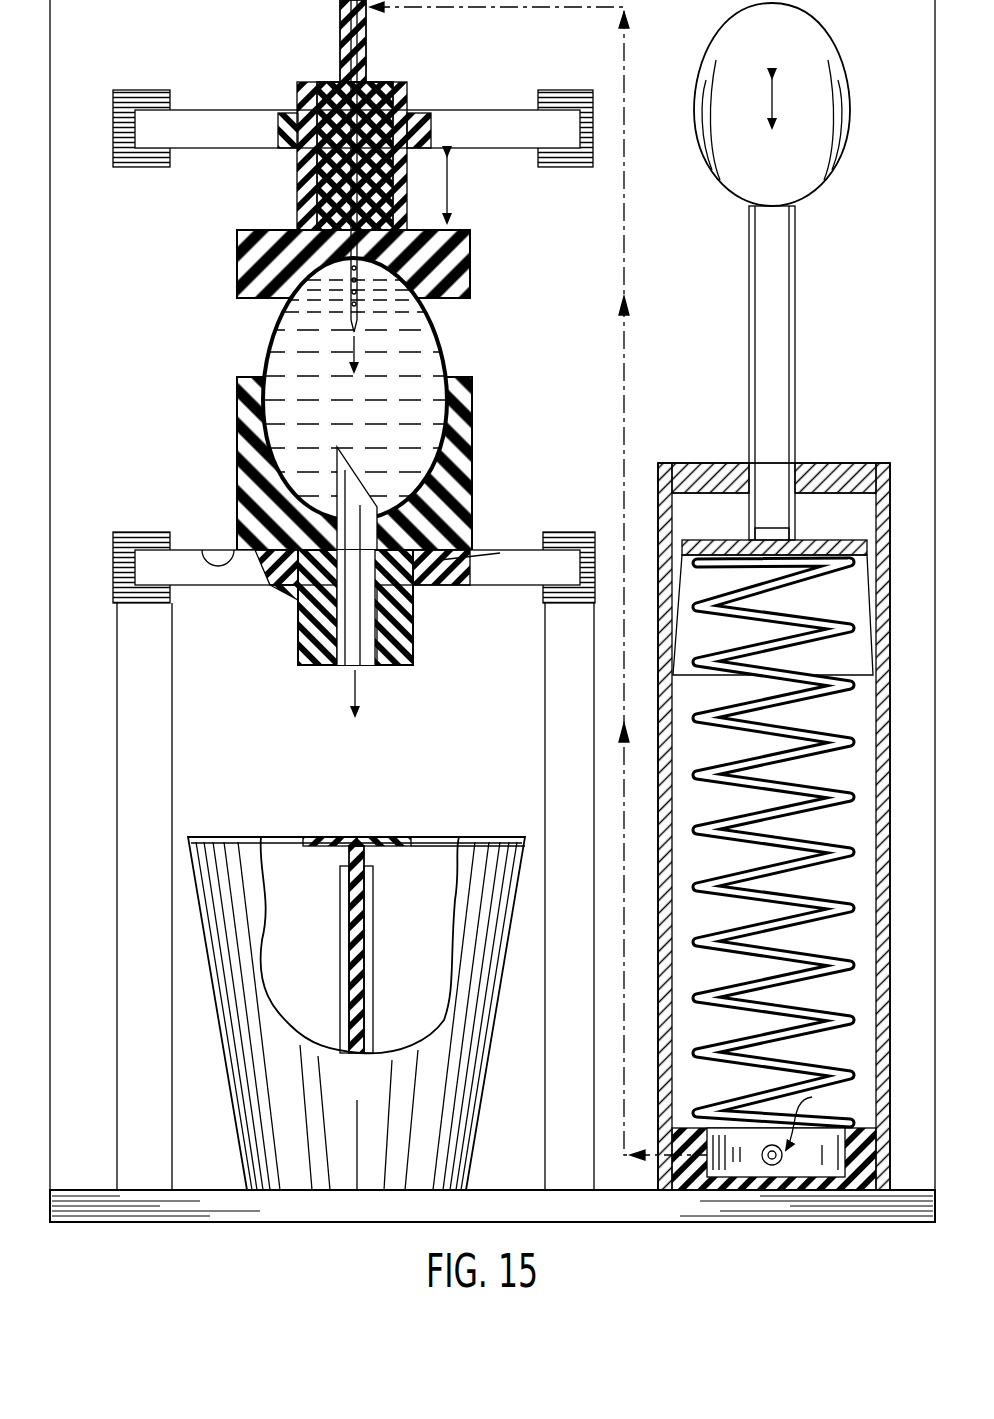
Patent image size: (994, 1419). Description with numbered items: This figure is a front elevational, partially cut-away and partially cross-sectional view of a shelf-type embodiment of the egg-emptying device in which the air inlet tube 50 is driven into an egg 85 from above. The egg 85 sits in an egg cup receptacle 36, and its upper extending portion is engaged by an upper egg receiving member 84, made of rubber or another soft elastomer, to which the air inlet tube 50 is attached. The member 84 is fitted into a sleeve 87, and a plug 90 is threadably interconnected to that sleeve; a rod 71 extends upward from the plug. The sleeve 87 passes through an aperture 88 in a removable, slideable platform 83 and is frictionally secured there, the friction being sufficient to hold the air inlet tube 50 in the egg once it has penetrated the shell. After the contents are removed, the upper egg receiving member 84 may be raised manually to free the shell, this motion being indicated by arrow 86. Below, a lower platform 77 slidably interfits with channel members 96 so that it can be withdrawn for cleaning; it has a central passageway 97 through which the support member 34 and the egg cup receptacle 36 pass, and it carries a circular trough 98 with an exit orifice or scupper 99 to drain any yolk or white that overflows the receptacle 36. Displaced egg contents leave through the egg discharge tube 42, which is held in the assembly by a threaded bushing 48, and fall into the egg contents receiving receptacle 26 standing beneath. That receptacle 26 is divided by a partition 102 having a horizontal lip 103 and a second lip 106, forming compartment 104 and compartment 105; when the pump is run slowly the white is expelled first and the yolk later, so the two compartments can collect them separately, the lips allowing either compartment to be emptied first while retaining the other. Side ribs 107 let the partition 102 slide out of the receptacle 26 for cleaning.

The rod 71 is at (366, 28).
The plug 90 is at (390, 82).
The aperture 88 is at (420, 113).
The platform 83 is at (480, 110).
The sleeve 87 is at (305, 166).
The arrow 86 is at (455, 184).
The upper egg receiving member 84 is at (455, 248).
The egg 85 is at (447, 352).
The air inlet tube 50 is at (360, 310).
The egg cup receptacle 36 is at (472, 400).
The egg discharge tube 42 is at (337, 470).
The channel members 96 is at (142, 532).
The circular trough 98 is at (218, 556).
The lower platform 77 is at (268, 590).
The central passageway 97 is at (294, 590).
The scupper 99 is at (445, 578).
The support member 34 is at (410, 640).
The threaded bushing 48 is at (385, 670).
The compartment 104 is at (268, 840).
The second lip 106 is at (318, 838).
The horizontal lip 103 is at (400, 838).
The compartment 105 is at (455, 840).
The side ribs 107 is at (340, 936).
The partition 102 is at (368, 970).
The egg contents receiving receptacle 26 is at (455, 1133).